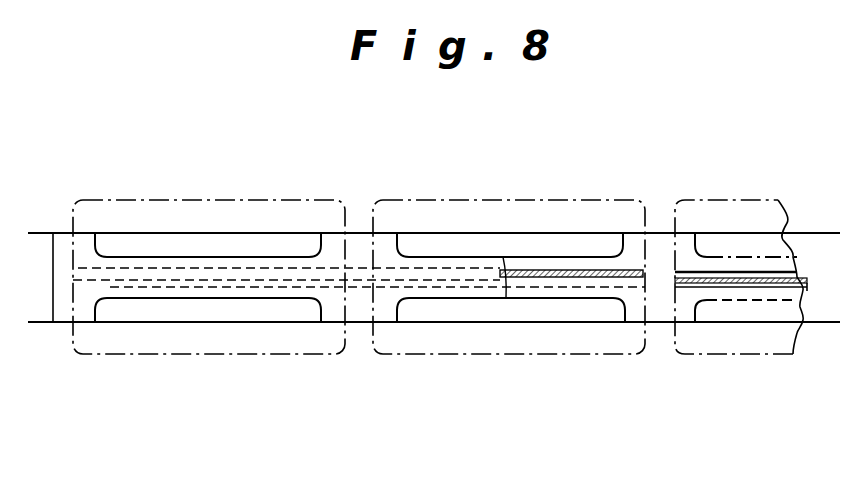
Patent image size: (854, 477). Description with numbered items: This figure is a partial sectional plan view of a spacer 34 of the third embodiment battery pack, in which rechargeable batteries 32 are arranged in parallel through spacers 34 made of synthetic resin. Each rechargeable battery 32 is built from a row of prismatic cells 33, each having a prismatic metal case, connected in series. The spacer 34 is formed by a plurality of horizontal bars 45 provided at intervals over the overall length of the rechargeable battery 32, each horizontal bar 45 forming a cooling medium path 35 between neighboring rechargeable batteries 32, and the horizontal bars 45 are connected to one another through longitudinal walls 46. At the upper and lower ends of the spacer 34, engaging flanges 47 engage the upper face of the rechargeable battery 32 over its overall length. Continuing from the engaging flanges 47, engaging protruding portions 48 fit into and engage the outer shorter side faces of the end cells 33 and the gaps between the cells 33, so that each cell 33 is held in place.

The rechargeable battery 32 is at (507, 196).
The prismatic cell 33 is at (300, 207).
The spacer 34 is at (227, 299).
The cooling medium path 35 is at (750, 287).
The horizontal bar 45 is at (157, 275).
The longitudinal wall 46 is at (146, 287).
The engaging flange 47 is at (193, 288).
The engaging protruding portion 48 is at (367, 395).